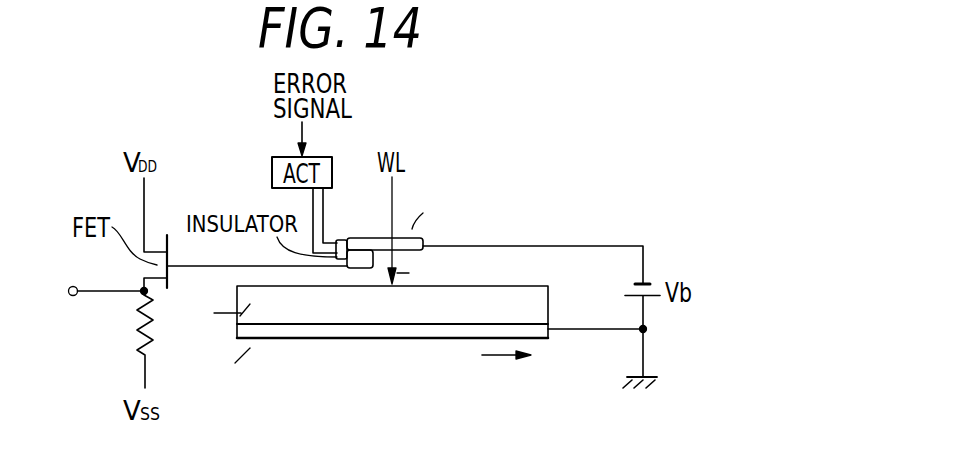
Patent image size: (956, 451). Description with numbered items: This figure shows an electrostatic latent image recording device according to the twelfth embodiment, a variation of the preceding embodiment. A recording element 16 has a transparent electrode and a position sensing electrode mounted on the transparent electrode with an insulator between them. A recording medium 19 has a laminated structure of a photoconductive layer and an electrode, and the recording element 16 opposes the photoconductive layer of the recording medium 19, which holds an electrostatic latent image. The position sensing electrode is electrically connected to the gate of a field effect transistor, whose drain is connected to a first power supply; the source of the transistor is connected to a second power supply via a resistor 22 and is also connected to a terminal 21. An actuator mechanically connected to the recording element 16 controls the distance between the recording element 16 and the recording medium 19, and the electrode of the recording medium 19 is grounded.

The recording element 16 is at (423, 252).
The recording medium 19 is at (538, 297).
The terminal 21 is at (72, 283).
The resistor 22 is at (130, 341).